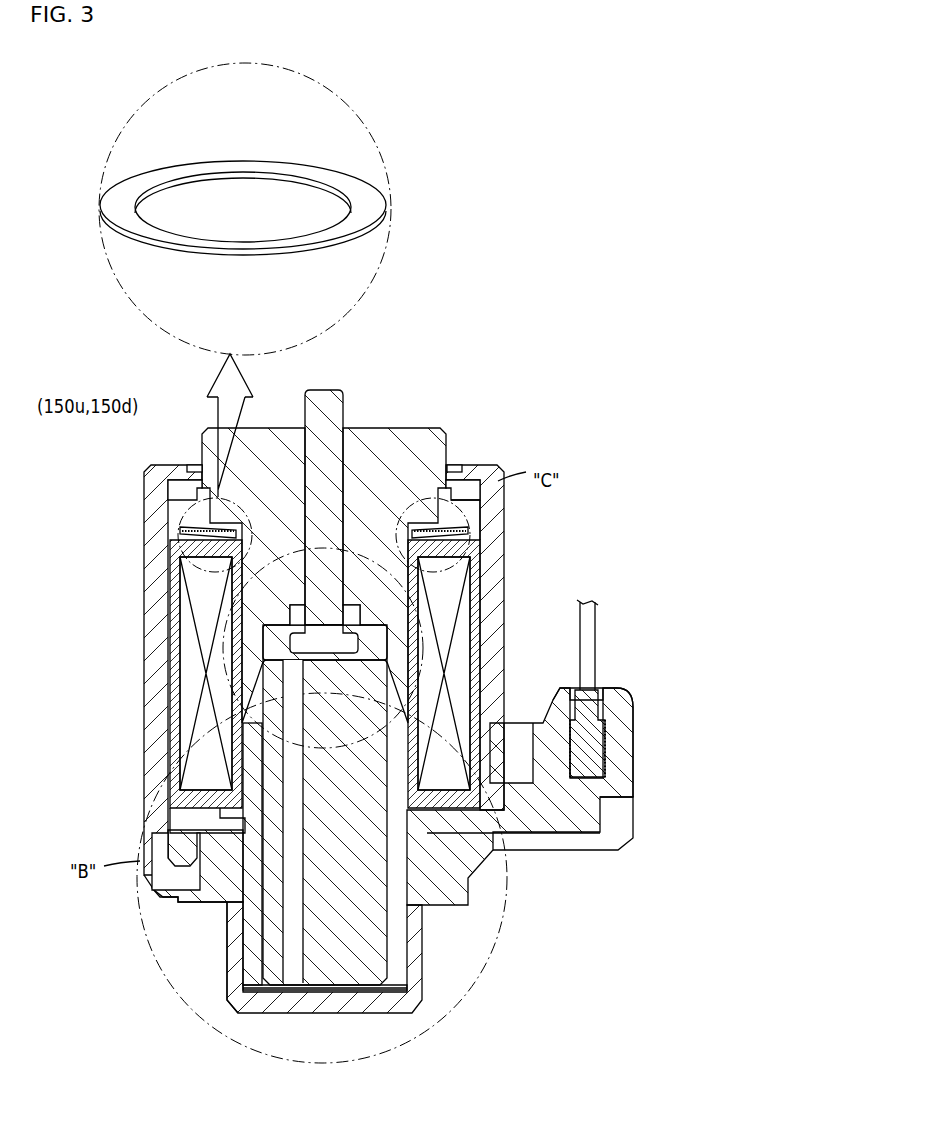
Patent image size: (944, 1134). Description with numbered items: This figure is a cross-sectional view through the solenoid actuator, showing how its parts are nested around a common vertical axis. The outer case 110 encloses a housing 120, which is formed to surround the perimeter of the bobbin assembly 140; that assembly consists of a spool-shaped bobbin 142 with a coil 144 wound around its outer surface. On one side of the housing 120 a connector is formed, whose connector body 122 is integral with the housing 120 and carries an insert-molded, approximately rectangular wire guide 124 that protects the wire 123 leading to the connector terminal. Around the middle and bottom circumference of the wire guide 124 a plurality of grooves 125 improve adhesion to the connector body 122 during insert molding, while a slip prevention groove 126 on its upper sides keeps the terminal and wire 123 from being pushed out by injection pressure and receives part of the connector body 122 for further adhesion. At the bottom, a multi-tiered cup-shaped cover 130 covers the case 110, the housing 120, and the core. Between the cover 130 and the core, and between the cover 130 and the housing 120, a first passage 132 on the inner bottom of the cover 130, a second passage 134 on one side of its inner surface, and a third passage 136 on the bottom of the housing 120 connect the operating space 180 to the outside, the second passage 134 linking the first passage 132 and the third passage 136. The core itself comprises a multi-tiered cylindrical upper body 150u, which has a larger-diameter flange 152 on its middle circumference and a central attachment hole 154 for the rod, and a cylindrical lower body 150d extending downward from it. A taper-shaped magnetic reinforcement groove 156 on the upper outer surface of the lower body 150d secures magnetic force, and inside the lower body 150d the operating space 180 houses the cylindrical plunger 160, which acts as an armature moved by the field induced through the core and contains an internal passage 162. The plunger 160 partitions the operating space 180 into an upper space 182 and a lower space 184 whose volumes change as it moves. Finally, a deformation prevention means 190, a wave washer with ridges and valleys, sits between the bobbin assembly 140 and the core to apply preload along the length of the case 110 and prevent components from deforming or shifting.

The case 110 is at (502, 541).
The housing 120 is at (470, 668).
The connector body 122 is at (620, 692).
The wire 123 is at (592, 650).
The wire guide 124 is at (586, 757).
The grooves 125 is at (610, 748).
The slip prevention groove 126 is at (598, 714).
The cover 130 is at (418, 1010).
The first passage 132 is at (241, 993).
The second passage 134 is at (228, 922).
The third passage 136 is at (477, 835).
The bobbin assembly 140 is at (252, 673).
The bobbin 142 is at (186, 592).
The coil 144 is at (187, 622).
The upper body 150u is at (202, 448).
The lower body 150d is at (245, 732).
The flange 152 is at (478, 518).
The attachment hole 154 is at (448, 452).
The magnetic reinforcement groove 156 is at (190, 683).
The plunger 160 is at (378, 935).
The passage 162 is at (293, 985).
The operating space 180 is at (432, 848).
The upper space 182 is at (373, 640).
The lower space 184 is at (380, 990).
The deformation prevention means 190 is at (360, 192).